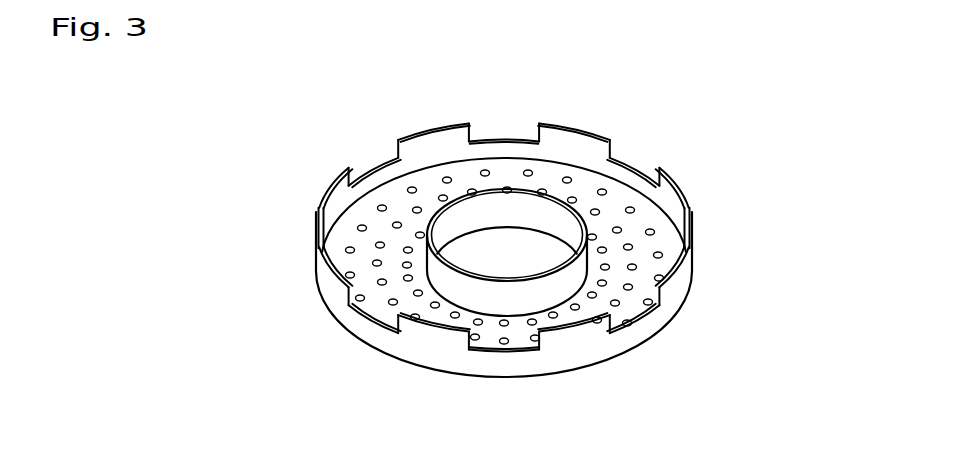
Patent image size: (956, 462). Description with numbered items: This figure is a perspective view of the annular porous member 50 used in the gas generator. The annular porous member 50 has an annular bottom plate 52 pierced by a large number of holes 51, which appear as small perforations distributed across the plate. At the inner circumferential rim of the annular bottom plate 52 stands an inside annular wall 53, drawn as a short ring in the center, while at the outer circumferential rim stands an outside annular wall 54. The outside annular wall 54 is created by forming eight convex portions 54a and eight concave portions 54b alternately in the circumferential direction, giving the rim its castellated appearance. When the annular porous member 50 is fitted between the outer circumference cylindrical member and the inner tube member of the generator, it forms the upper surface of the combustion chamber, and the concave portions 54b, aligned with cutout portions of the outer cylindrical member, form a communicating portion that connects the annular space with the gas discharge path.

The annular porous member 50 is at (600, 119).
The hole 51 is at (382, 205).
The annular bottom plate 52 is at (462, 180).
The inside annular wall 53 is at (509, 316).
The outside annular wall 54 is at (578, 343).
The convex portion 54a is at (434, 342).
The concave portion 54b is at (358, 313).